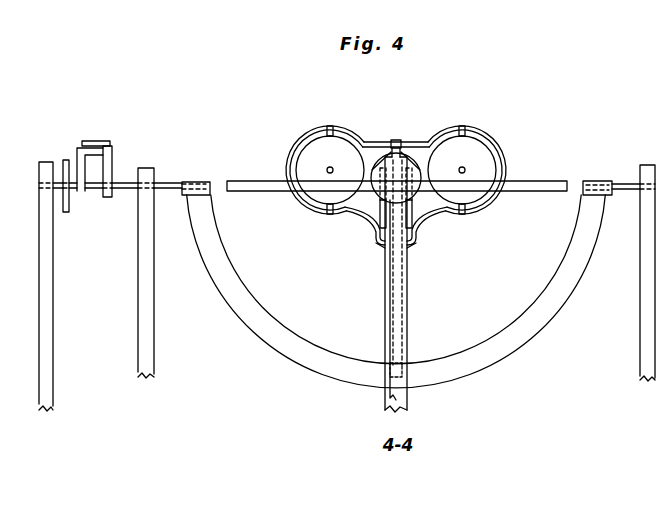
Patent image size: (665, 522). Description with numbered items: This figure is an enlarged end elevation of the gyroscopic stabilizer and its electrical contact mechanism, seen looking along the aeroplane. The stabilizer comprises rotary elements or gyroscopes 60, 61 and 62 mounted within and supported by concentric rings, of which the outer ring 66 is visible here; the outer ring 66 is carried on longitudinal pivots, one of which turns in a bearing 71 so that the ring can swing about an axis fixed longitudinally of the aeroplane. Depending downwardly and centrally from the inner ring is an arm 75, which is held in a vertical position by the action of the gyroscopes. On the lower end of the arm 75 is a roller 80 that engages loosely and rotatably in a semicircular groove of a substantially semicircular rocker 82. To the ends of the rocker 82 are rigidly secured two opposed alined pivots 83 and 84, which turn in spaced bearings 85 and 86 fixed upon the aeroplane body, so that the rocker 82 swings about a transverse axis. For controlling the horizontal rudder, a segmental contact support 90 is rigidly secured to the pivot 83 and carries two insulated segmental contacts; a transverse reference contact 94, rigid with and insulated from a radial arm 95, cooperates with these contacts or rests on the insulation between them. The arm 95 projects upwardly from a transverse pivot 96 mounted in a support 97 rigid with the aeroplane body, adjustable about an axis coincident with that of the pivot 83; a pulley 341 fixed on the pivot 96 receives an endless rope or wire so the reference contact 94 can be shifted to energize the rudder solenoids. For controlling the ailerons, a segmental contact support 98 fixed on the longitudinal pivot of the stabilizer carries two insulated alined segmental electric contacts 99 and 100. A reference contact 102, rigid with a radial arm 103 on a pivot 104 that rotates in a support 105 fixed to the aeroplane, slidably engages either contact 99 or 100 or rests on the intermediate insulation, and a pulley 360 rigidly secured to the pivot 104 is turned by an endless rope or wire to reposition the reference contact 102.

The pulley 341 is at (66, 158).
The radial arm 95 is at (78, 147).
The transverse reference contact 94 is at (101, 141).
The segmental contact support 90 is at (112, 157).
The transverse pivot 96 is at (58, 180).
The support 97 is at (42, 243).
The bearing 85 is at (147, 263).
The pivot 83 is at (172, 182).
The rocker 82 is at (322, 363).
The pivot 84 is at (622, 181).
The bearing 86 is at (646, 277).
The outer ring 66 is at (248, 186).
The gyroscope 62 is at (311, 145).
The gyroscope 60 is at (480, 158).
The segmental electric contact 99 is at (366, 136).
The segmental electric contact 100 is at (447, 135).
The segmental contact support 98 is at (403, 147).
The pulley 360 is at (368, 200).
The gyroscope 61 is at (382, 212).
The support 105 is at (388, 244).
The reference contact 102 is at (396, 140).
The radial arm 103 is at (384, 166).
The pivot 104 is at (412, 200).
The bearing 71 is at (409, 300).
The arm 75 is at (409, 268).
The roller 80 is at (406, 370).